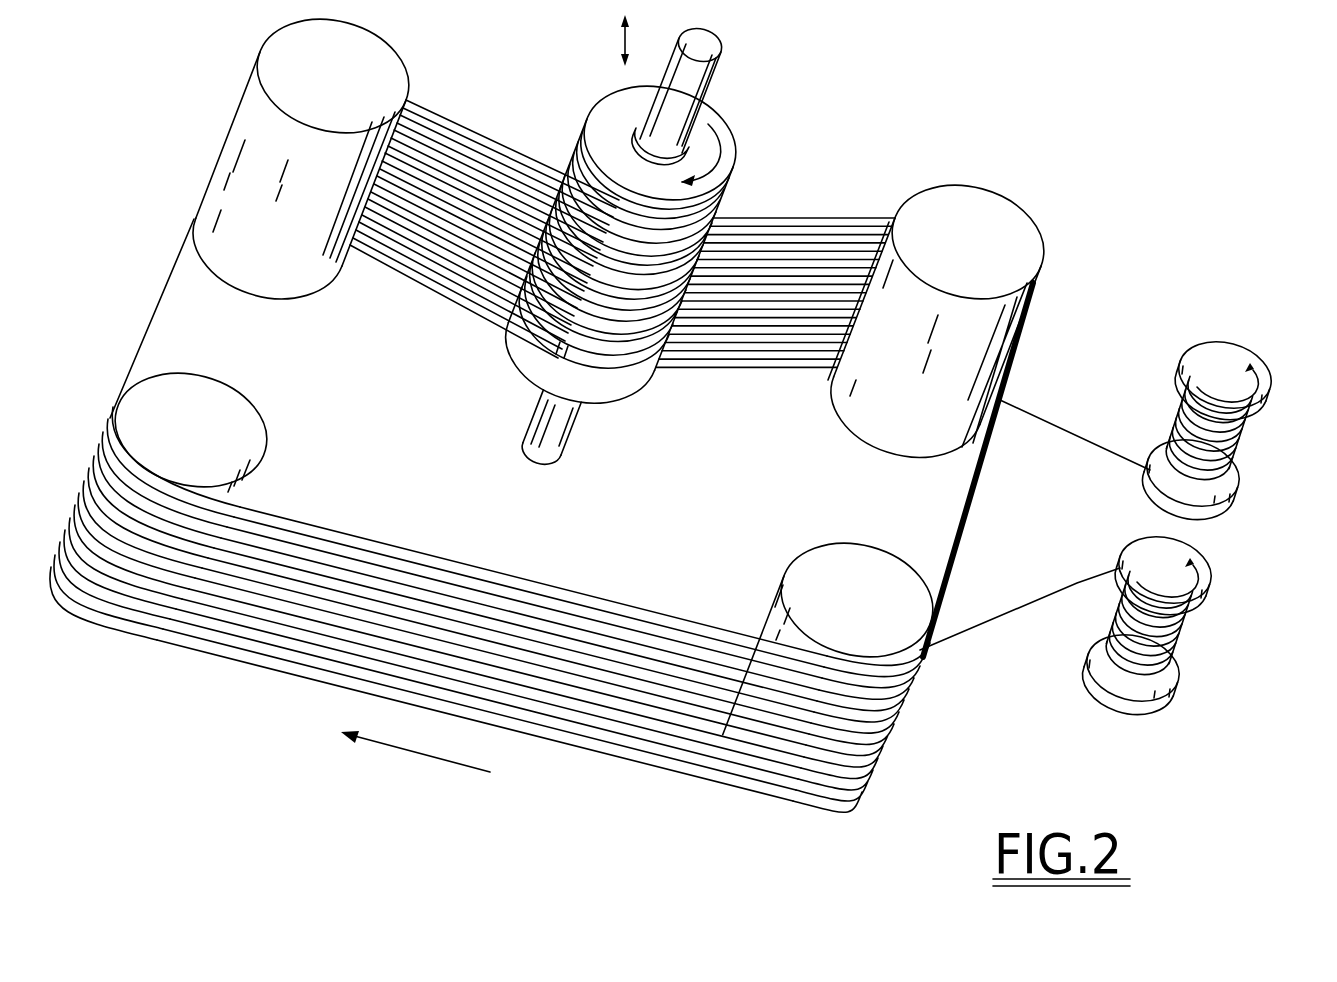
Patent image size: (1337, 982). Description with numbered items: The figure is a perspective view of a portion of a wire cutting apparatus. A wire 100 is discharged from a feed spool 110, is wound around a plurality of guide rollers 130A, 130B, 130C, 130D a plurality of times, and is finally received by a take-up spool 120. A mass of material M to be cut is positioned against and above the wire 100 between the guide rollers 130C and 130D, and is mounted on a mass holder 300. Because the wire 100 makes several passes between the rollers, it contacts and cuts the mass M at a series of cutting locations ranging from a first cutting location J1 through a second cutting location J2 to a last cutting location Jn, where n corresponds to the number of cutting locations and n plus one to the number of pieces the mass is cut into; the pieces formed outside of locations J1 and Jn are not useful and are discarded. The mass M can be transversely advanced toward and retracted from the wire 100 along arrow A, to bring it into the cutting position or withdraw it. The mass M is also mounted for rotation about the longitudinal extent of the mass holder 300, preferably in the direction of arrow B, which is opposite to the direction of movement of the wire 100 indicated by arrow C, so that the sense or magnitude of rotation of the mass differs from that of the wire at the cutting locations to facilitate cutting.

The wire 100 is at (817, 215).
The feed spool 110 is at (1205, 566).
The take-up spool 120 is at (1240, 357).
The guide roller 130A is at (808, 560).
The guide roller 130B is at (262, 455).
The guide roller 130C is at (292, 287).
The guide roller 130D is at (857, 425).
The mass holder 300 is at (712, 48).
The mass of material M is at (647, 267).
The arrow A is at (607, 40).
The arrow B is at (725, 152).
The arrow C is at (415, 758).
The cutting location Jn is at (722, 208).
The cutting location J1 is at (605, 368).
The cutting location J2 is at (650, 372).